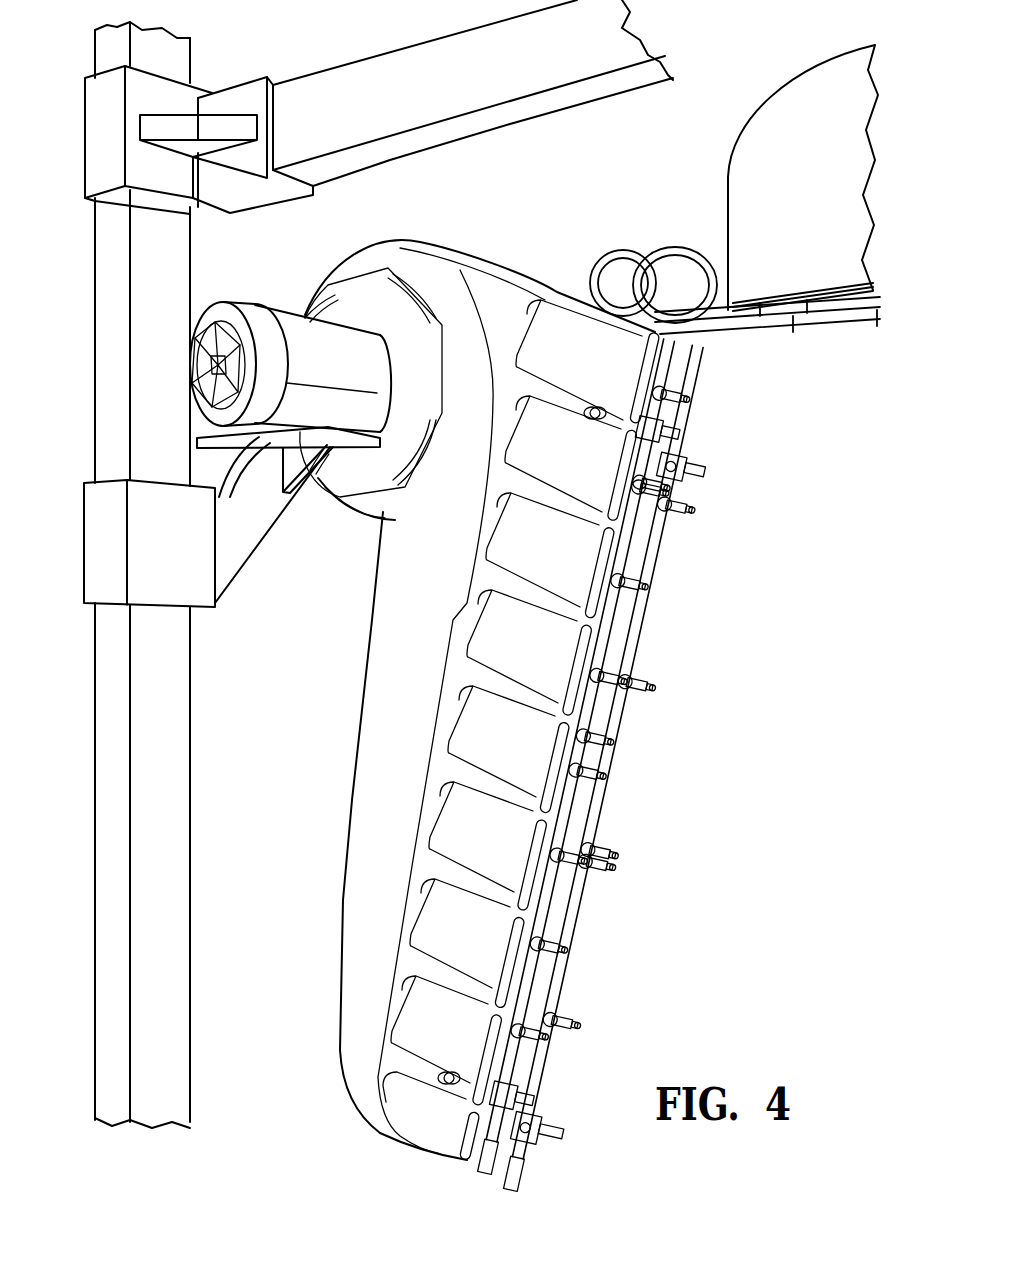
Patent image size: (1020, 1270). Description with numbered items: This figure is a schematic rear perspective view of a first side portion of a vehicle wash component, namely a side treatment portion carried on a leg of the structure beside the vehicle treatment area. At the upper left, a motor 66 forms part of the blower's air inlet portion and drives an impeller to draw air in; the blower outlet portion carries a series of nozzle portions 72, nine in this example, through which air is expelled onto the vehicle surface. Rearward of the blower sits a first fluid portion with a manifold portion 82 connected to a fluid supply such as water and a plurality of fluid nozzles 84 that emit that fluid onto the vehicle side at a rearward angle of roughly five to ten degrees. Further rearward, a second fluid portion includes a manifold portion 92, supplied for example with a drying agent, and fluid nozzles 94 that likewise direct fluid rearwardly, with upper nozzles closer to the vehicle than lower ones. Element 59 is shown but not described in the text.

The manifold tube 59 is at (588, 759).
The motor 66 is at (242, 302).
The nozzle portions 72 is at (585, 647).
The manifold portion 82 is at (595, 739).
The fluid nozzles 84 is at (668, 459).
The manifold portion 92 is at (618, 771).
The fluid nozzles 94 is at (600, 852).